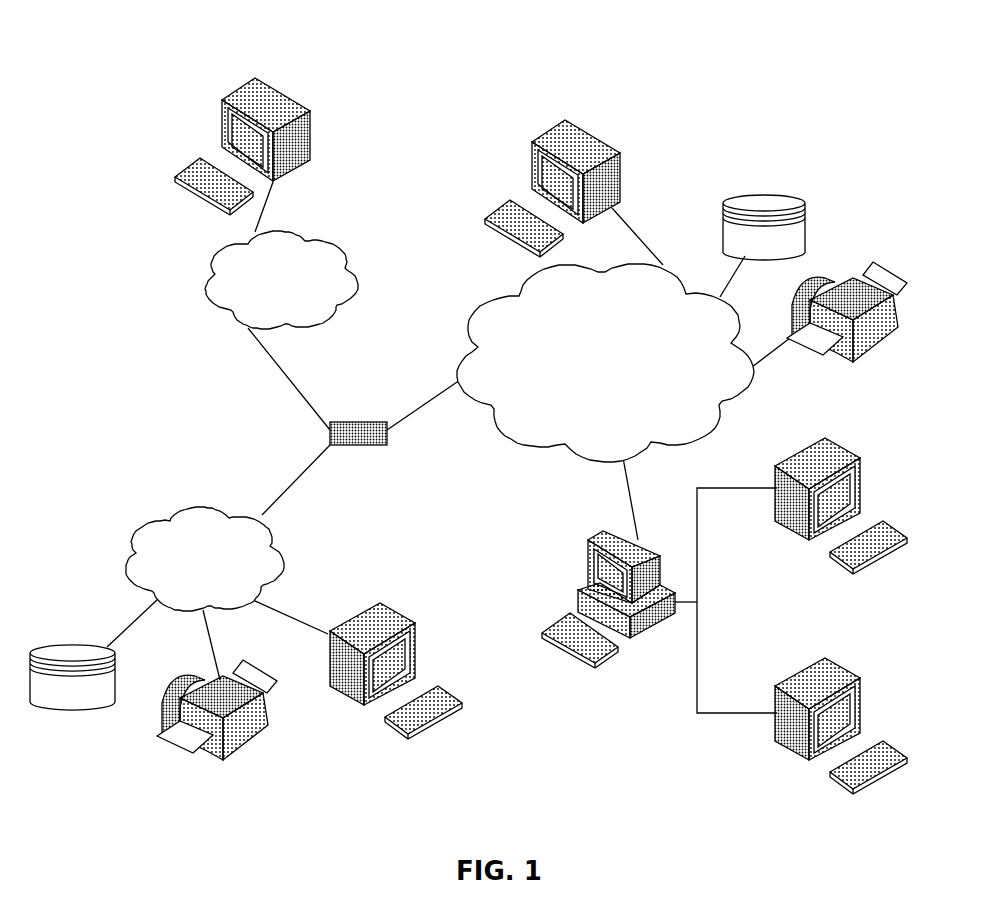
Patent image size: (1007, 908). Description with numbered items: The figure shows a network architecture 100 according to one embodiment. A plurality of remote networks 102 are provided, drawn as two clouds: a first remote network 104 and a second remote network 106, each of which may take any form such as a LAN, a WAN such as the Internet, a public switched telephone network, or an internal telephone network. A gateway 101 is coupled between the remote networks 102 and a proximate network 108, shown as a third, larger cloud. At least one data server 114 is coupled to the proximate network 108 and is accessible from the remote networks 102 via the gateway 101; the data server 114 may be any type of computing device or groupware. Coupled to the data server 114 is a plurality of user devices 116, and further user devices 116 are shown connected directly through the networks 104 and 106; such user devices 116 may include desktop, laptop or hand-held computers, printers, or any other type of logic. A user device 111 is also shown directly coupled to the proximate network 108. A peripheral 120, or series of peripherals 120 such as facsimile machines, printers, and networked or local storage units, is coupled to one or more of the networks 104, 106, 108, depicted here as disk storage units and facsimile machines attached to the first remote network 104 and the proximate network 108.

The architecture 100 is at (148, 59).
The gateway 101 is at (340, 422).
The remote networks 102 is at (176, 349).
The first remote network 104 is at (128, 532).
The second remote network 106 is at (350, 249).
The proximate network 108 is at (712, 425).
The user device 111 is at (618, 152).
The data server 114 is at (588, 551).
The user devices 116 is at (312, 118).
The peripheral 120 is at (800, 203).